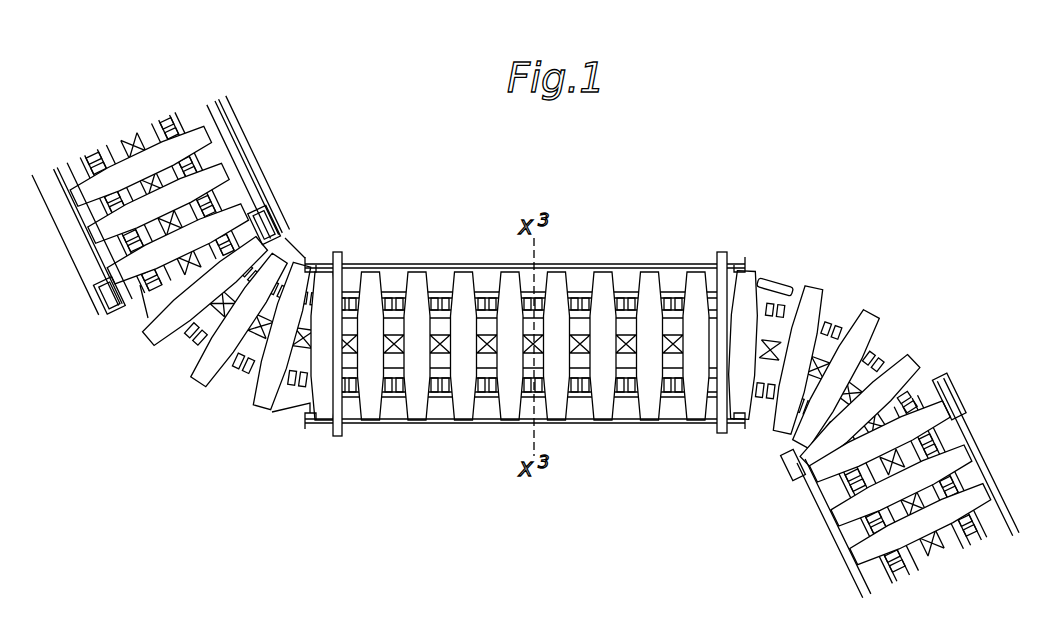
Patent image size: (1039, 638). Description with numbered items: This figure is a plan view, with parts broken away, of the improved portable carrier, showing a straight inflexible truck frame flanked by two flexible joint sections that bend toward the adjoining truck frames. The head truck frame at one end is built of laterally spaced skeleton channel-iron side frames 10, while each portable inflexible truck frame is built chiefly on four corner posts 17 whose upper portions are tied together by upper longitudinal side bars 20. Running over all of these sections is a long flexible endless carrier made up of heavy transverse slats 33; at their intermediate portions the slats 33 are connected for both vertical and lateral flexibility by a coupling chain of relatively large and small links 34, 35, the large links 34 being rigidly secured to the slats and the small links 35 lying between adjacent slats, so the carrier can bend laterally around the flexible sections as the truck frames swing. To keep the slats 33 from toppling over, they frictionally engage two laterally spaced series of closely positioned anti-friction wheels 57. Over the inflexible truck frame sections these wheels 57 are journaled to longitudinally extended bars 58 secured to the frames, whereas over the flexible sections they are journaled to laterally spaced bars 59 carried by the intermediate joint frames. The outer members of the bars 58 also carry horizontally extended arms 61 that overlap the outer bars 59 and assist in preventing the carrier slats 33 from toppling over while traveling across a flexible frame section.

The skeleton channel-iron side frames 10 is at (262, 194).
The corner posts 17 is at (316, 262).
The upper longitudinal side bars 20 is at (645, 266).
The transverse slats 33 is at (460, 280).
The large links 34 is at (223, 310).
The small links 35 is at (190, 280).
The anti-friction wheels 57 is at (200, 162).
The longitudinally extended bars 58 is at (182, 128).
The laterally spaced bars 59 is at (240, 377).
The horizontally extended arms 61 is at (137, 312).